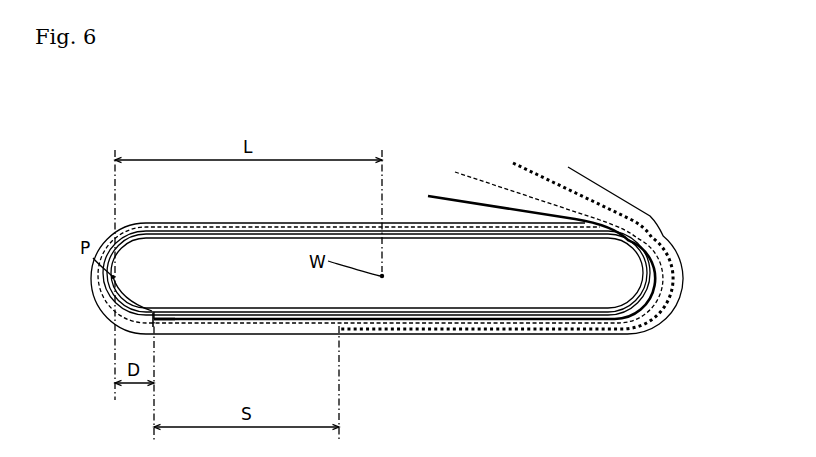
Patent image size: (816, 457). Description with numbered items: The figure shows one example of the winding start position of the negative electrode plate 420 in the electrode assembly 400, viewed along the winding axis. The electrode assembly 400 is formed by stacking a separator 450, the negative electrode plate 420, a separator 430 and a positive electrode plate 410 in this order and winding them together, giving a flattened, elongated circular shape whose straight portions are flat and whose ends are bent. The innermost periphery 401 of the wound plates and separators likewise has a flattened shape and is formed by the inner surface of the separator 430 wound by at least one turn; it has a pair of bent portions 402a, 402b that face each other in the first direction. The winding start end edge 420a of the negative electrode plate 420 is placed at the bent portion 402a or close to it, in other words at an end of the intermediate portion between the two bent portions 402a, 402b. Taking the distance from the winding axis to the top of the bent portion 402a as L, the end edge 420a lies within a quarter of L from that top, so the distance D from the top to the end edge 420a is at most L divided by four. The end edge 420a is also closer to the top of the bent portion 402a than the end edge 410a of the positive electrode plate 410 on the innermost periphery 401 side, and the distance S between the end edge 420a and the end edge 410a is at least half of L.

The electrode assembly 400 is at (647, 165).
The innermost periphery 401 is at (470, 307).
The bent portion 402a is at (164, 279).
The bent portion 402b is at (594, 278).
The positive electrode plate 410 is at (386, 332).
The end edge of the positive electrode plate 410a is at (340, 334).
The negative electrode plate 420 is at (293, 324).
The end edge of the negative electrode plate 420a is at (153, 316).
The separator 430 is at (406, 222).
The separator 450 is at (484, 179).